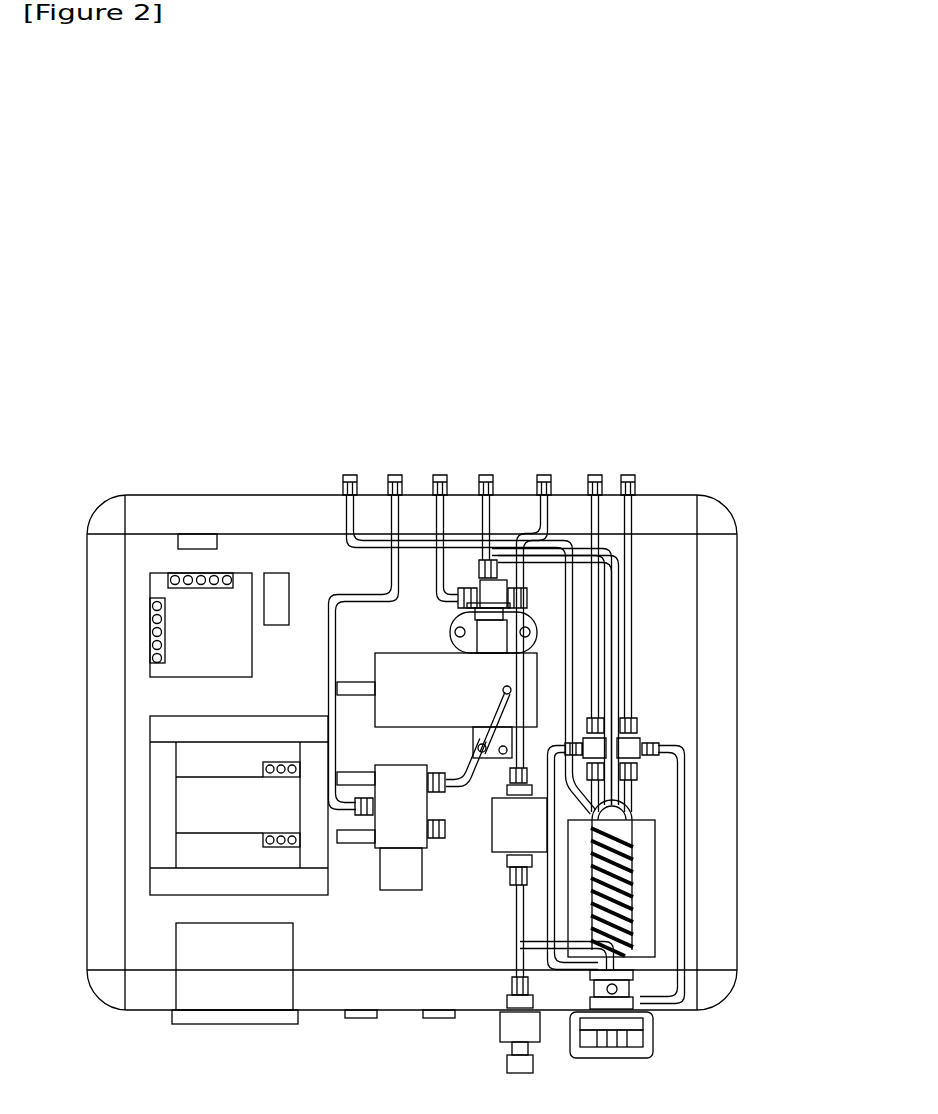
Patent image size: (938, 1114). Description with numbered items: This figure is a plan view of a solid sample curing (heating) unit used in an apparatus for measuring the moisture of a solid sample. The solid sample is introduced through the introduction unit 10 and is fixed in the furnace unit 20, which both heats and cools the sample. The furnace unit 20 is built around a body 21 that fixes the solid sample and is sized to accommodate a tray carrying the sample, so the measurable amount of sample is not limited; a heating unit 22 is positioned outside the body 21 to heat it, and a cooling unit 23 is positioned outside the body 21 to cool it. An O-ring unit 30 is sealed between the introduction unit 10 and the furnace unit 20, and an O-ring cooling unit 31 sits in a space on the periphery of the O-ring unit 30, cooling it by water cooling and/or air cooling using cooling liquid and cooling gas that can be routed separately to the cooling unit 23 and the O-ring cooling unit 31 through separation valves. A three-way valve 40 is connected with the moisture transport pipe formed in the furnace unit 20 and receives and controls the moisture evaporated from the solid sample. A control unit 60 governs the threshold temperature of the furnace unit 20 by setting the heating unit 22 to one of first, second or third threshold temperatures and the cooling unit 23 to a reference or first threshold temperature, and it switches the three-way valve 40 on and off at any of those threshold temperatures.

The introduction unit 10 is at (643, 1027).
The furnace unit 20 is at (713, 875).
The body 21 is at (620, 828).
The heating unit 22 is at (637, 885).
The cooling unit 23 is at (633, 843).
The O-ring unit 30 is at (637, 1007).
The O-ring cooling unit 31 is at (630, 967).
The 3-way valve 40 is at (507, 582).
The control unit 60 is at (238, 1017).